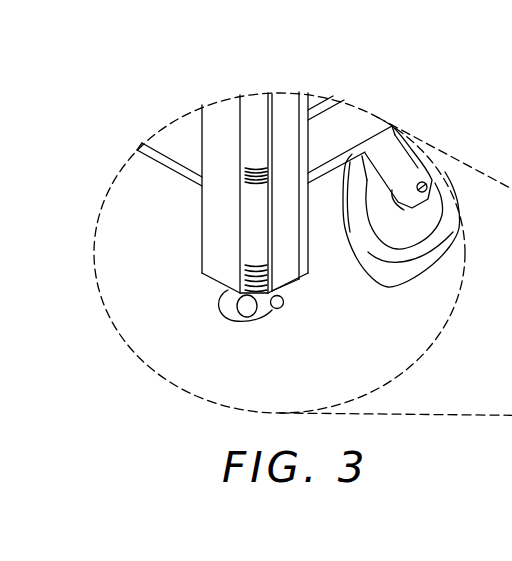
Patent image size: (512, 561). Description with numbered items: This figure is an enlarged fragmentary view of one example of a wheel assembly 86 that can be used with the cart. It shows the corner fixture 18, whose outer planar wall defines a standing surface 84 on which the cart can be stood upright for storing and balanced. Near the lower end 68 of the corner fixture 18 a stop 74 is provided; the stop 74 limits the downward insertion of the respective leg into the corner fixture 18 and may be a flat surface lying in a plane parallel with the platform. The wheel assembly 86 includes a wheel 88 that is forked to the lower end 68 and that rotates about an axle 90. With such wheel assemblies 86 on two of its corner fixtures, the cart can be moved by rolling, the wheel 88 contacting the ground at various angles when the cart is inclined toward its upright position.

The corner fixture 18 is at (196, 191).
The standing surfaces 84 is at (215, 236).
The lower end 68 is at (215, 282).
The stop 74 is at (293, 277).
The wheel assembly 86 is at (244, 339).
The wheel 88 is at (232, 301).
The axle 90 is at (279, 309).